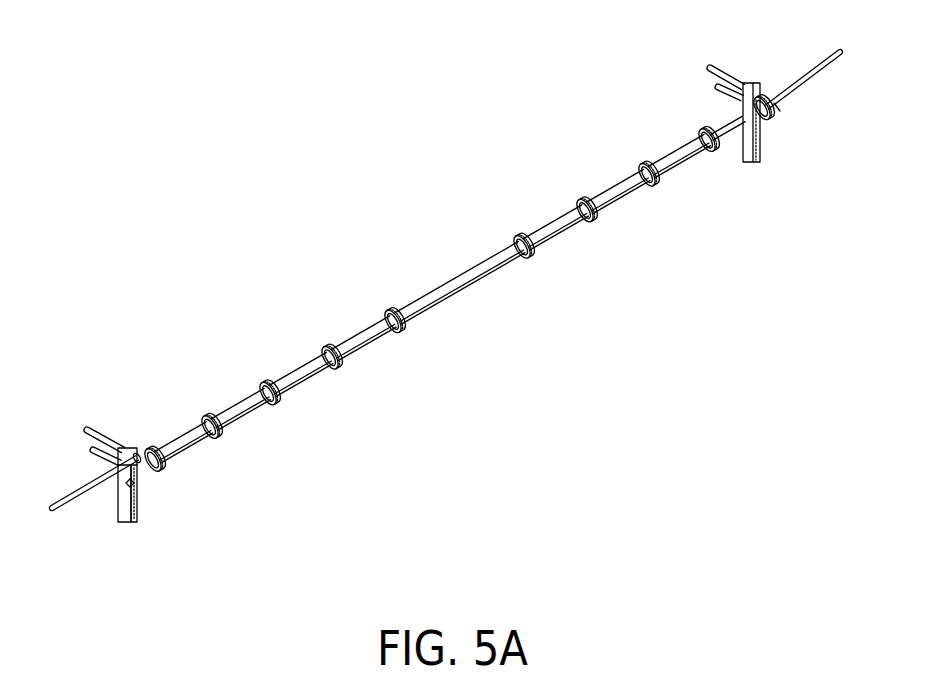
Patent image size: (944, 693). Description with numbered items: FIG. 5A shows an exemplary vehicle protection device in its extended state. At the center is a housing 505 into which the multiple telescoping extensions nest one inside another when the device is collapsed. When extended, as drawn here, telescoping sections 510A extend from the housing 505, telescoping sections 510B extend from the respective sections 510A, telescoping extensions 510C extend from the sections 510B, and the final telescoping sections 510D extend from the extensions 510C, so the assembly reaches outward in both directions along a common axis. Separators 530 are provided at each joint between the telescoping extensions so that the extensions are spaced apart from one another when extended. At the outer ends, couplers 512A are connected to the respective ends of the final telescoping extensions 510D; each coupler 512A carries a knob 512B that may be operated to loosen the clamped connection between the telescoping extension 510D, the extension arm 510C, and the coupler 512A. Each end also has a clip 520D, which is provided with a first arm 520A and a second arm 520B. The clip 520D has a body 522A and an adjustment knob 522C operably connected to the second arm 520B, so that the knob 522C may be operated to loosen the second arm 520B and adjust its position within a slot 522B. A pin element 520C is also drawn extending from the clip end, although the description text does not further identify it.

The housing 505 is at (413, 305).
The telescoping section 510A is at (363, 347).
The telescoping section 510B is at (293, 387).
The telescoping extension 510C is at (242, 417).
The telescoping section 510D is at (187, 446).
The coupler 512A is at (140, 455).
The knob 512B is at (163, 468).
The first arm 520A is at (728, 63).
The second arm 520B is at (722, 93).
The pin 520C is at (833, 60).
The clip 520D is at (763, 143).
The body 522A is at (122, 514).
The slot 522B is at (142, 512).
The adjustment knob 522C is at (135, 483).
The separator 530 is at (327, 352).